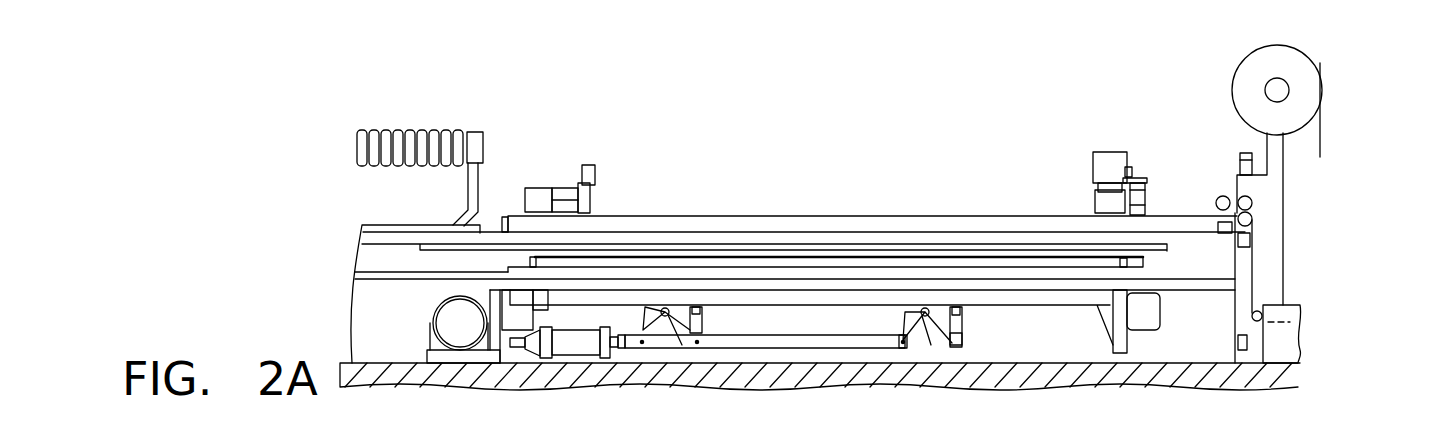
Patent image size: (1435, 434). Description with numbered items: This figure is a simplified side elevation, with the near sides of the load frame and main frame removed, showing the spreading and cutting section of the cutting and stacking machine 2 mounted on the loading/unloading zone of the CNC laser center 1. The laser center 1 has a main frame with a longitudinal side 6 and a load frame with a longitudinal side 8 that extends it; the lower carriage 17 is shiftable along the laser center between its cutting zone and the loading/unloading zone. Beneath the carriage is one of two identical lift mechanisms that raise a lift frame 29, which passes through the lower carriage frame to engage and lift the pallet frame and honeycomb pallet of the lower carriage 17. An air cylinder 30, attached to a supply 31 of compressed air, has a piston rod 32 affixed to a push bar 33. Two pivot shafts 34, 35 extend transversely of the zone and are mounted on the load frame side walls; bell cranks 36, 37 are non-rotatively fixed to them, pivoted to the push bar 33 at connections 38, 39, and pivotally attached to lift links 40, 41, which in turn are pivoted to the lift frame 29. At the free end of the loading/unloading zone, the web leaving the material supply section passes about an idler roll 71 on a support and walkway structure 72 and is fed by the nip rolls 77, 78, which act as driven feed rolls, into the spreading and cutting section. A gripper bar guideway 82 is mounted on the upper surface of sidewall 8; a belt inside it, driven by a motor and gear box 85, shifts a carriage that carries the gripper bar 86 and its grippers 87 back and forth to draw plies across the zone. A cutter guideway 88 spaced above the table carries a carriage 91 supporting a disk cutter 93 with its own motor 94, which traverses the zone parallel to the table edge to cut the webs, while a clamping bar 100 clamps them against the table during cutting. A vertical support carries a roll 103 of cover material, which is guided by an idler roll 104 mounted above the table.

The CNC laser center 1 is at (489, 163).
The cutting and stacking machine 2 is at (882, 176).
The longitudinal side of main frame 6 is at (410, 316).
The longitudinal side of load frame 8 is at (1206, 340).
The lower carriage 17 is at (613, 272).
The lift frame 29 is at (1045, 300).
The air cylinder 30 is at (570, 346).
The supply of compressed air 31 is at (447, 323).
The piston rod 32 is at (527, 345).
The push bar 33 is at (773, 340).
The pivot shaft 34 is at (670, 318).
The pivot shaft 35 is at (948, 343).
The bell crank 36 is at (663, 330).
The bell crank 37 is at (925, 340).
The pivot connection 38 is at (640, 343).
The pivot connection 39 is at (903, 338).
The lift link 40 is at (700, 328).
The lift link 41 is at (963, 328).
The idler roll 71 is at (1258, 311).
The support and walkway structure 72 is at (1287, 353).
The nip roll 77 is at (1253, 197).
The nip roll 78 is at (1253, 214).
The gripper bar guideway 82 is at (737, 224).
The motor and gear box 85 is at (1227, 247).
The gripper bar 86 is at (540, 190).
The gripper 87 is at (591, 197).
The cutter guideway 88 is at (1105, 158).
The carriage 91 is at (1098, 188).
The disk cutter 93 is at (1147, 185).
The motor 94 is at (1097, 207).
The clamping bar 100 is at (1147, 203).
The roll of cover material 103 is at (1307, 68).
The idler roll 104 is at (1287, 182).